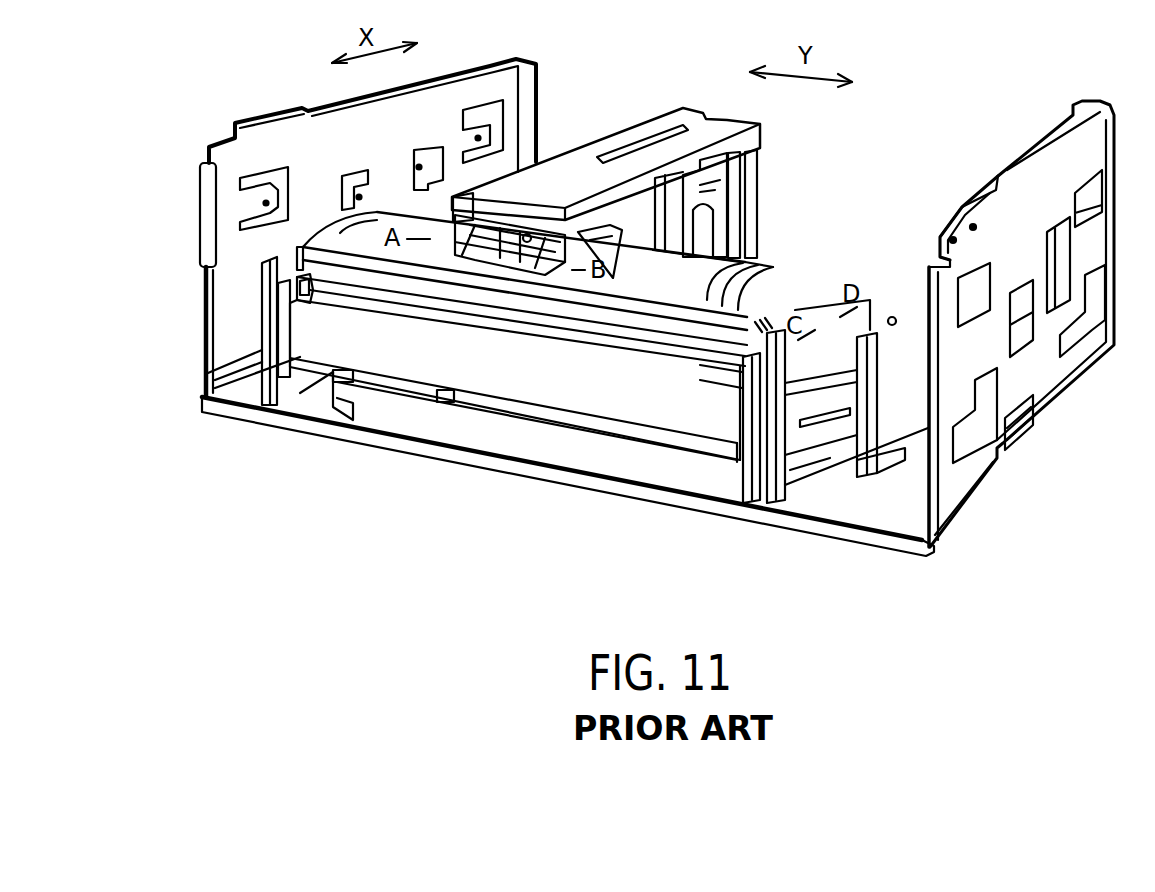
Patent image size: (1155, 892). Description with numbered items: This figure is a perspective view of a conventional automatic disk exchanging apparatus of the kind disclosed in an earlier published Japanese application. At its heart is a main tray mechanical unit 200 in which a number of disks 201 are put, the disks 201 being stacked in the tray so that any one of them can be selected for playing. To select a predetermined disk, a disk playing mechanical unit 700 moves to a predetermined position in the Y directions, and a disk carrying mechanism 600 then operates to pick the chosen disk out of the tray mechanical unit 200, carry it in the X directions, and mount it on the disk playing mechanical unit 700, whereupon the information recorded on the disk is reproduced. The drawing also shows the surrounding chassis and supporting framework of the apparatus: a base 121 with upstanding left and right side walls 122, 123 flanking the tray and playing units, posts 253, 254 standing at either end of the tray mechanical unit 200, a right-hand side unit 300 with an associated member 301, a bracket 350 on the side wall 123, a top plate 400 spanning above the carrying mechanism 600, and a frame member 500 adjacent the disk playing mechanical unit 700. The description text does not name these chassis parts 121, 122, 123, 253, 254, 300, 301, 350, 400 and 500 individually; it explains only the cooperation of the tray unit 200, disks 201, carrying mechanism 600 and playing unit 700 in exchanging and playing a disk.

The base plate 121 is at (607, 463).
The left side wall 122 is at (206, 333).
The right side wall 123 is at (952, 515).
The main tray mechanical unit 200 is at (507, 413).
The disks 201 is at (400, 373).
The left support post 253 is at (260, 377).
The right support post 254 is at (773, 500).
The right side unit 300 is at (880, 523).
The support member 301 is at (827, 470).
The mounting bracket 350 is at (915, 272).
The top plate 400 is at (620, 113).
The frame member 500 is at (820, 252).
The disk carrying mechanism 600 is at (576, 197).
The disk playing mechanical unit 700 is at (820, 199).